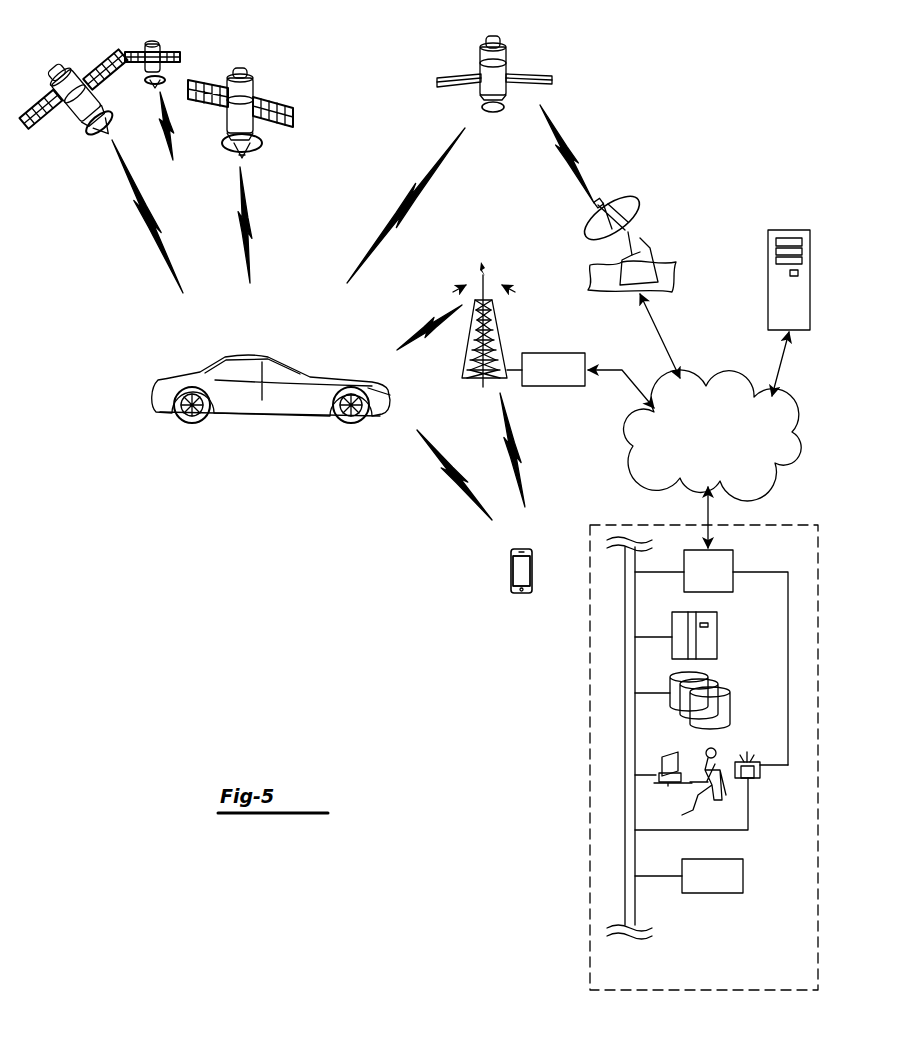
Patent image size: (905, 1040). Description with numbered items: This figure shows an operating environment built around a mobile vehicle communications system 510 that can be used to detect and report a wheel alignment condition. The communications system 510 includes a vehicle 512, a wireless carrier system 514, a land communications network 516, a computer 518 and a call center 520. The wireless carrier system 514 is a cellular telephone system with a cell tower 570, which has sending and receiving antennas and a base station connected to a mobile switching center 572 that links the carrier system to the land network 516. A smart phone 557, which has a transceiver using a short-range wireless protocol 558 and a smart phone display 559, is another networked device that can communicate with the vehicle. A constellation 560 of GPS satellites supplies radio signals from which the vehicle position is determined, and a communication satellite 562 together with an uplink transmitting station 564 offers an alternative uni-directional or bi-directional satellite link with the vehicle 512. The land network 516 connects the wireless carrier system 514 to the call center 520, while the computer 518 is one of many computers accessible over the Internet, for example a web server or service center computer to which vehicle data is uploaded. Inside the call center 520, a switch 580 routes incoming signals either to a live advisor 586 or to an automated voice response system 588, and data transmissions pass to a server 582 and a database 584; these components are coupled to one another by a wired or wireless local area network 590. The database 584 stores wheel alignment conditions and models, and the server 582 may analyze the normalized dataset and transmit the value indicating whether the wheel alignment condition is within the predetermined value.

The mobile vehicle communications system 510 is at (668, 92).
The vehicle 512 is at (153, 395).
The wireless carrier system 514 is at (468, 395).
The land communications network 516 is at (797, 437).
The computer 518 is at (810, 305).
The call center 520 is at (590, 957).
The smart phone 557 is at (511, 570).
The short-range wireless protocol 558 is at (418, 440).
The smart phone display 559 is at (532, 565).
The constellation of GPS satellites 560 is at (290, 152).
The communication satellite 562 is at (508, 57).
The uplink transmitting station 564 is at (656, 268).
The cell tower 570 is at (497, 330).
The mobile switching center 572 is at (553, 387).
The switch 580 is at (733, 560).
The server 582 is at (717, 636).
The database 584 is at (733, 712).
The live advisor 586 is at (680, 803).
The automated voice response system 588 is at (743, 876).
The local area network 590 is at (637, 905).